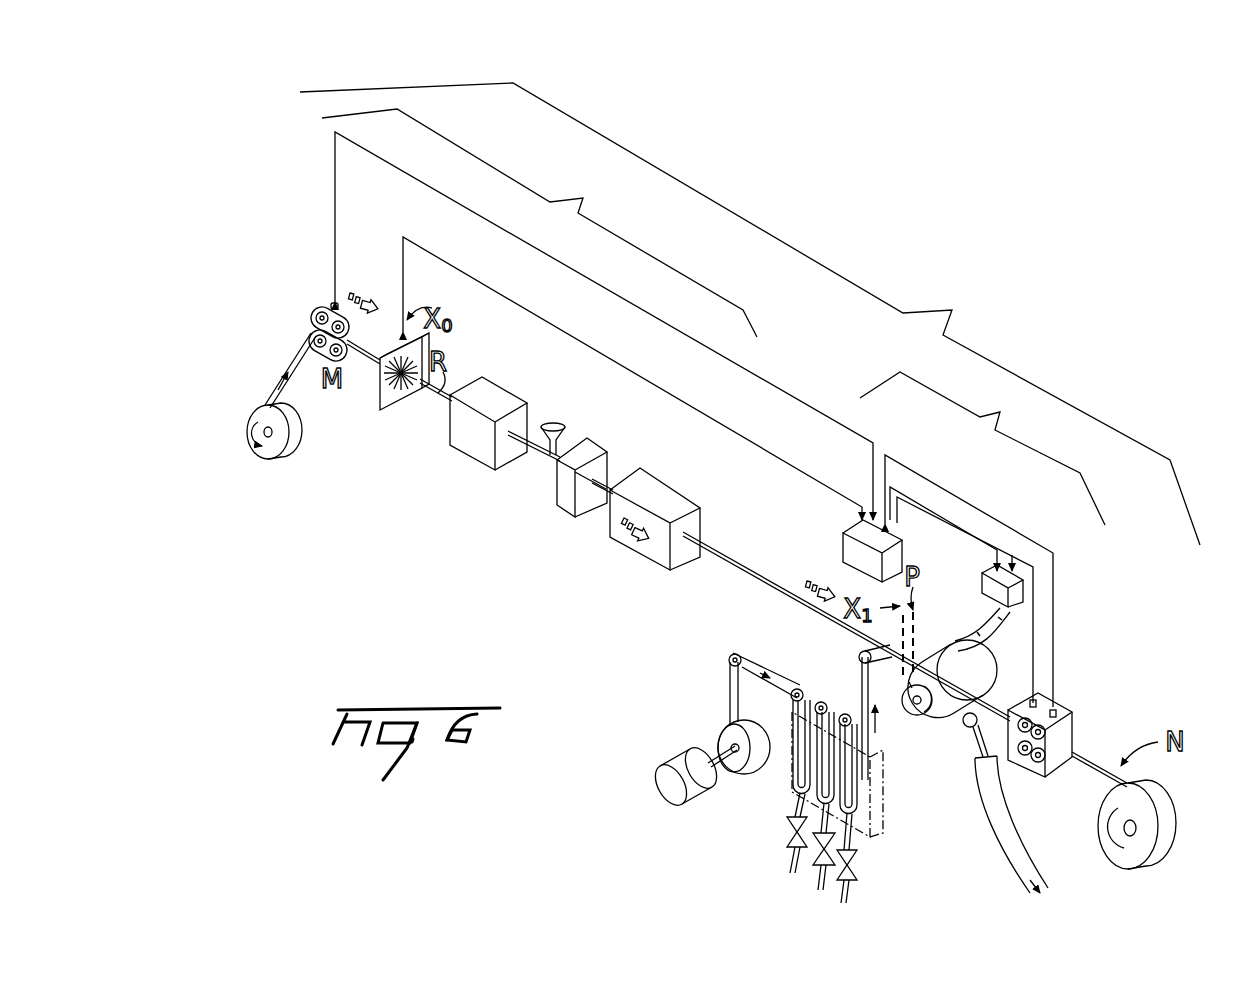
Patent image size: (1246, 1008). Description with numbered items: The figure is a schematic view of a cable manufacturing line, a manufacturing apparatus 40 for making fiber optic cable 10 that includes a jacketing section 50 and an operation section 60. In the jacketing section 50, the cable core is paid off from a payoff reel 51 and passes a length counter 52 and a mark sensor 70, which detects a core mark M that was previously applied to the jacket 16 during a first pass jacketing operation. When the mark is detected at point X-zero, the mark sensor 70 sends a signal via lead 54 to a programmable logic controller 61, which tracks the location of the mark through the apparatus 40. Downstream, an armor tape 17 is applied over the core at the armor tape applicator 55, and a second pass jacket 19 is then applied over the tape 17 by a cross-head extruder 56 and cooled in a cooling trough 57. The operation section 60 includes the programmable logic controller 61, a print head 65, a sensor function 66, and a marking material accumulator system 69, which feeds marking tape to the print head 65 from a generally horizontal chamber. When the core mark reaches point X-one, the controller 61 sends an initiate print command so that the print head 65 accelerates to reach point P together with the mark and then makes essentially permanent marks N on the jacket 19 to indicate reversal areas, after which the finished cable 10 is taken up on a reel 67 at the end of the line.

The fiber optic cable 10 is at (812, 612).
The jacket 16 is at (291, 362).
The armor tape 17 is at (542, 457).
The second pass jacket 19 is at (602, 492).
The manufacturing apparatus 40 is at (750, 314).
The jacketing section 50 is at (539, 223).
The payoff reel 51 is at (258, 437).
The length counter 52 is at (318, 308).
The lead 54 is at (524, 312).
The armor tape applicator 55 is at (470, 442).
The cross-head extruder 56 is at (562, 497).
The cooling trough 57 is at (650, 548).
The operation section 60 is at (982, 448).
The programmable logic controller 61 is at (843, 538).
The print head 65 is at (921, 724).
The sensor function 66 is at (1084, 712).
The take-up spool 67 is at (1153, 860).
The marking material accumulator system 69 is at (712, 712).
The mark sensor 70 is at (372, 406).